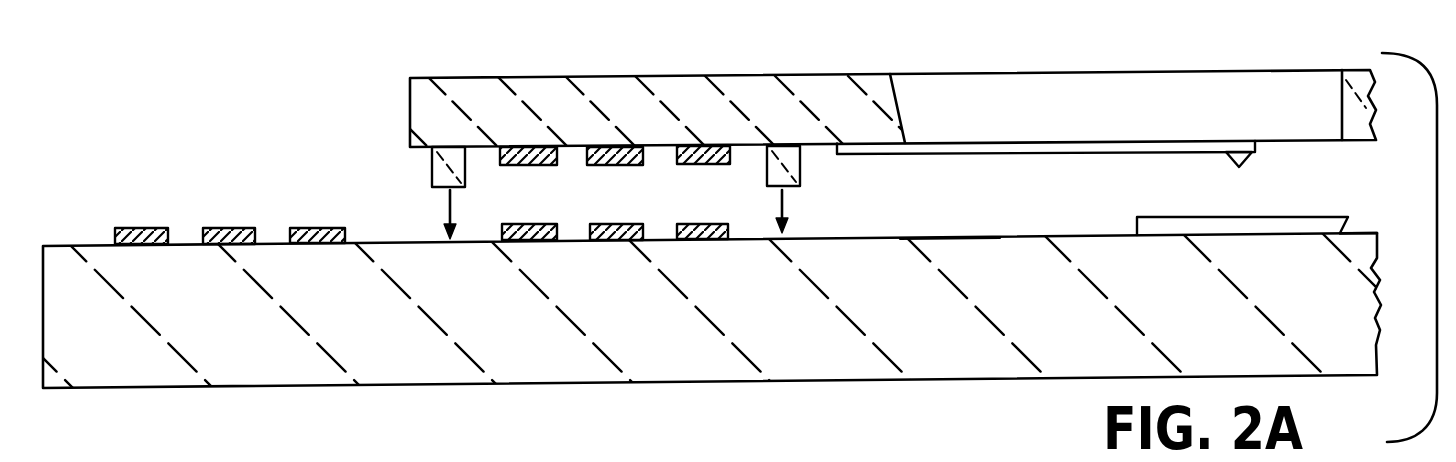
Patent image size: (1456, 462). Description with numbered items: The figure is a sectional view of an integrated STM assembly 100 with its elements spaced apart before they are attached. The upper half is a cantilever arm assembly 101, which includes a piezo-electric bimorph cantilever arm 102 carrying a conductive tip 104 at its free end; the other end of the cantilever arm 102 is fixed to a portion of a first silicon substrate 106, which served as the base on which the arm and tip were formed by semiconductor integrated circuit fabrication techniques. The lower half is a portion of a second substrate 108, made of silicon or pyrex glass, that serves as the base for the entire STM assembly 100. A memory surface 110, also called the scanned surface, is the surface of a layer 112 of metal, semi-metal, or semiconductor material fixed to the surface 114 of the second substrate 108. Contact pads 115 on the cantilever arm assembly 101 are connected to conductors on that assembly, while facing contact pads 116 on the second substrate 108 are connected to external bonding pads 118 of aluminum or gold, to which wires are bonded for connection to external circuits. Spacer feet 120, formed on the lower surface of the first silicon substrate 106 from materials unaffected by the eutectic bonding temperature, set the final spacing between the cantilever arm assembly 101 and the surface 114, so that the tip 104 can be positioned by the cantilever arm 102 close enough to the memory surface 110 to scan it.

The STM assembly 100 is at (1192, 43).
The cantilever arm assembly 101 is at (928, 90).
The piezo-electric bimorph cantilever arm 102 is at (1046, 126).
The conductive tip 104 is at (1197, 174).
The first silicon substrate 106 is at (640, 91).
The second substrate 108 is at (900, 361).
The memory surface 110 is at (1247, 200).
The layer of material 112 is at (1377, 208).
The surface of the second substrate 114 is at (950, 211).
The contact pads 115 is at (615, 177).
The contact pads 116 is at (615, 209).
The external bonding pads 118 is at (230, 202).
The spacer feet 120 is at (618, 192).